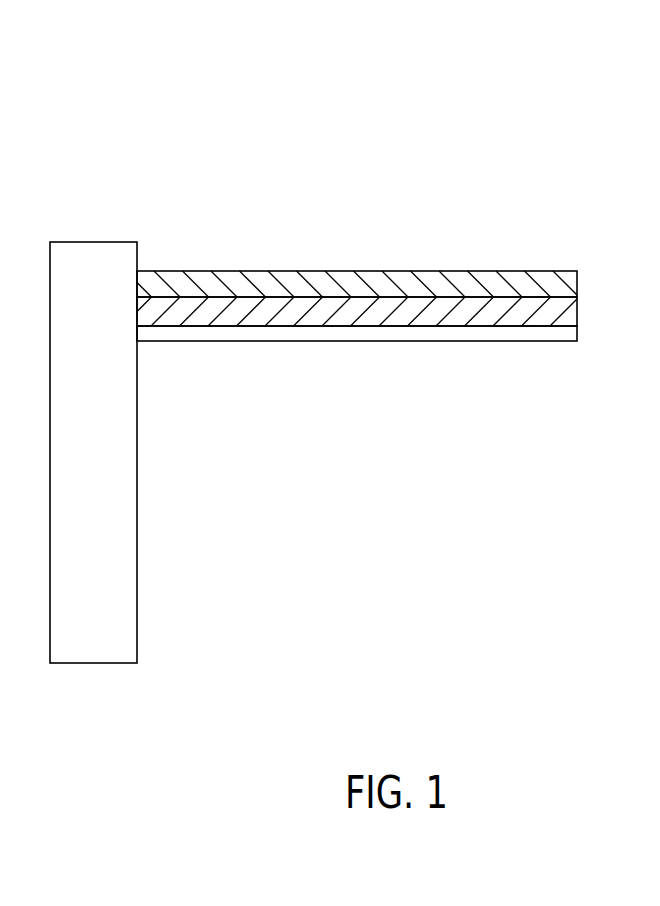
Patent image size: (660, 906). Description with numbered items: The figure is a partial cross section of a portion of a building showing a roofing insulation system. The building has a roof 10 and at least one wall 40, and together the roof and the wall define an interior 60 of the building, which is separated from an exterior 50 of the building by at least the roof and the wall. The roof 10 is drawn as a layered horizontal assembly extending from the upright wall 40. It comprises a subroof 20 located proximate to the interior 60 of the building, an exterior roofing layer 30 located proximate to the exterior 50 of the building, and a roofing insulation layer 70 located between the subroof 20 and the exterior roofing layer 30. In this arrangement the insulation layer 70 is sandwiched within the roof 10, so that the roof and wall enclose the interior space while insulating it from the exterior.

The roof 10 is at (574, 193).
The subroof 20 is at (565, 333).
The exterior roofing layer 30 is at (565, 279).
The wall 40 is at (83, 241).
The exterior 50 is at (245, 33).
The interior 60 is at (307, 473).
The roofing insulation layer 70 is at (565, 312).